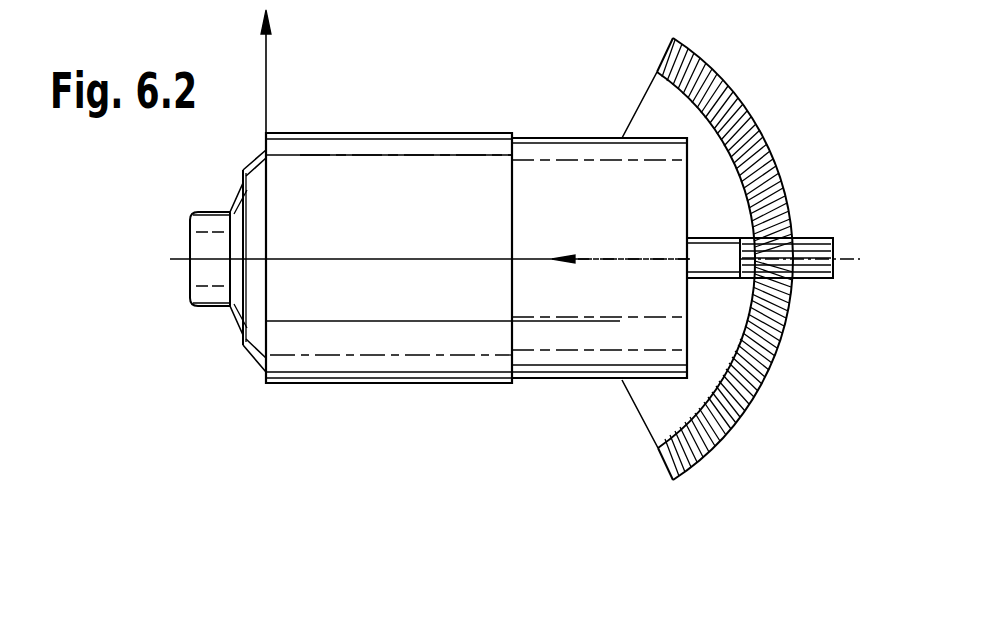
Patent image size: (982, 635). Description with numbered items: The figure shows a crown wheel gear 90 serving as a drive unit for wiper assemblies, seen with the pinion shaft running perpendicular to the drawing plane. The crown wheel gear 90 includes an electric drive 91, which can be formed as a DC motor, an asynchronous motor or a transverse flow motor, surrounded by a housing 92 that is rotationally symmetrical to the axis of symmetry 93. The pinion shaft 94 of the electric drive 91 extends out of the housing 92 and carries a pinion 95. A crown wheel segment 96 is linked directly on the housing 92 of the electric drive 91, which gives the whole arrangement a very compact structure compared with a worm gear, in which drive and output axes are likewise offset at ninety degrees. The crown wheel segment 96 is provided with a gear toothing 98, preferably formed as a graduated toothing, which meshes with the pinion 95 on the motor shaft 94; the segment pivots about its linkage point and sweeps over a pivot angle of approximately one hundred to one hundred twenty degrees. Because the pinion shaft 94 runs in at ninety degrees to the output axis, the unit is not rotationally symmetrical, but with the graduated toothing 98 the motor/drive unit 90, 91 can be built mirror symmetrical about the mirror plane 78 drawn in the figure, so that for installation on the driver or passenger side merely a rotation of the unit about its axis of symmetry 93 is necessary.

The mirror plane 78 is at (385, 258).
The crown wheel gear 90 is at (433, 118).
The electric drive 91 is at (333, 200).
The housing 92 is at (466, 295).
The axis of symmetry 93 is at (603, 260).
The pinion shaft 94 is at (690, 243).
The pinion 95 is at (740, 235).
The crown wheel segment 96 is at (716, 160).
The toothing 98 is at (728, 423).